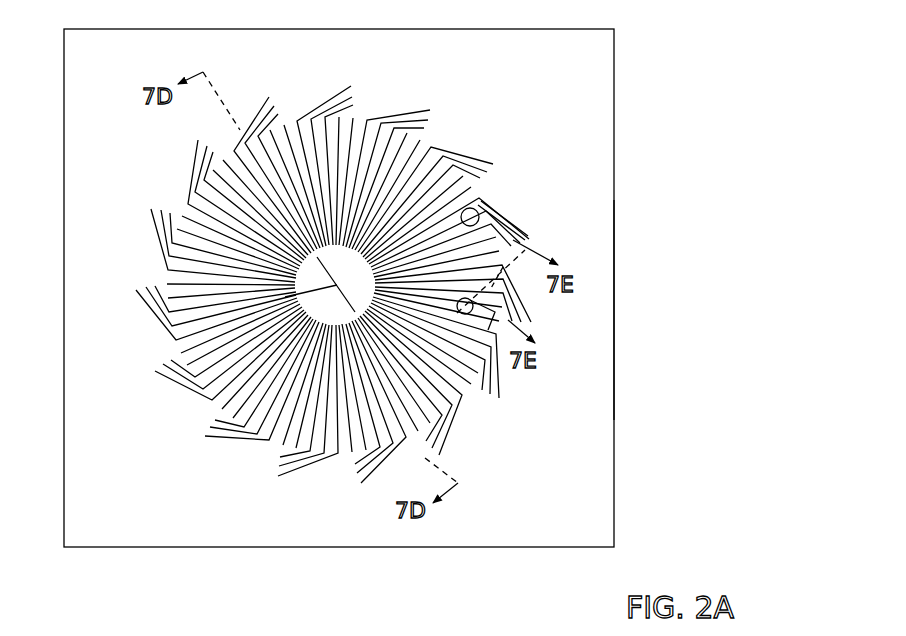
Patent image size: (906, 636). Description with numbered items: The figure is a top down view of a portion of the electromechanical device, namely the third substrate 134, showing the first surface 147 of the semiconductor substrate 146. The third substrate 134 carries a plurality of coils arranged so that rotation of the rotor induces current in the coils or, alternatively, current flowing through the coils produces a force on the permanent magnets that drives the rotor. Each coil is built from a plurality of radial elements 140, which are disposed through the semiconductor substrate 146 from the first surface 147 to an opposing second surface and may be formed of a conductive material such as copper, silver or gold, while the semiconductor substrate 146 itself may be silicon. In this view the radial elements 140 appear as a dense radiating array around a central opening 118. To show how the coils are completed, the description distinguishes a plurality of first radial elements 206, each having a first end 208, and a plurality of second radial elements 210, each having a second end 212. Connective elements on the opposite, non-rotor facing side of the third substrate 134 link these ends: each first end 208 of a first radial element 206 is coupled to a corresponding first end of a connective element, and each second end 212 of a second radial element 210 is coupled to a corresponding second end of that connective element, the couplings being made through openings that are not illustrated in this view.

The central hub / fastener opening 118 is at (250, 292).
The third substrate 134 is at (647, 77).
The radial elements 140 is at (373, 108).
The semiconductor substrate 146 is at (613, 310).
The first surface 147 is at (583, 64).
The first radial elements 206 is at (513, 240).
The first end 208 is at (505, 322).
The second radial elements 210 is at (478, 207).
The second end 212 is at (516, 228).